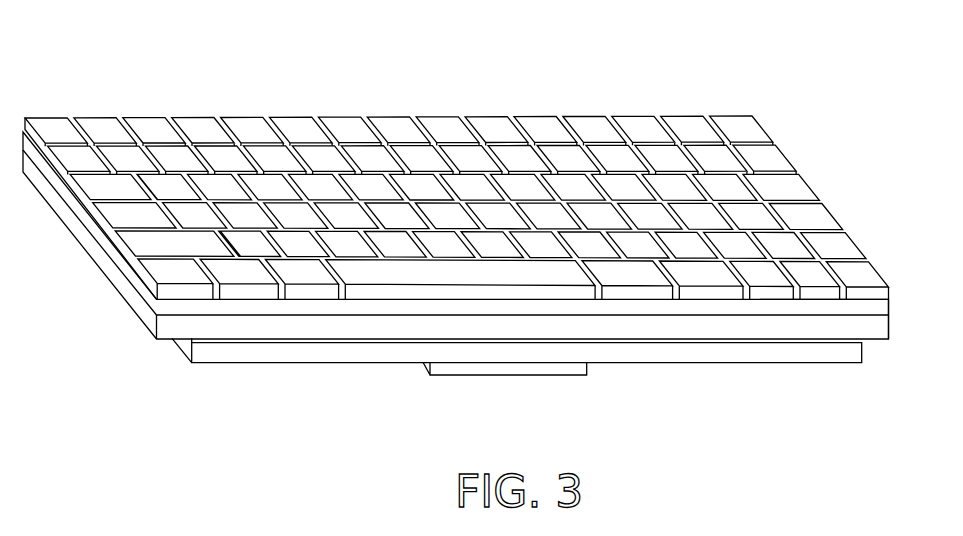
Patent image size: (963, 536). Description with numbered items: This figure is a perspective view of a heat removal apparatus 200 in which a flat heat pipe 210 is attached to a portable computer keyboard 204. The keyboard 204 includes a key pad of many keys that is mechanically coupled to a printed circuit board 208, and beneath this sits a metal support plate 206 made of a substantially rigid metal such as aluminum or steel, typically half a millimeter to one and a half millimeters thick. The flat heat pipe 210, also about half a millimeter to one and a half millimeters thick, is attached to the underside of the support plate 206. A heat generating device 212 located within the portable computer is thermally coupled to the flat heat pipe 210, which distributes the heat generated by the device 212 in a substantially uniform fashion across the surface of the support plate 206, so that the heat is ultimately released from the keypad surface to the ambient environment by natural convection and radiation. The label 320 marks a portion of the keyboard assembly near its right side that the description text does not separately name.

The heat removal apparatus 200 is at (456, 244).
The portable computer keyboard 204 is at (768, 162).
The metal support plate 206 is at (184, 326).
The printed circuit board 208 is at (176, 306).
The flat heat pipe 210 is at (289, 353).
The heat generating device 212 is at (482, 367).
The side wall portion 320 is at (803, 308).